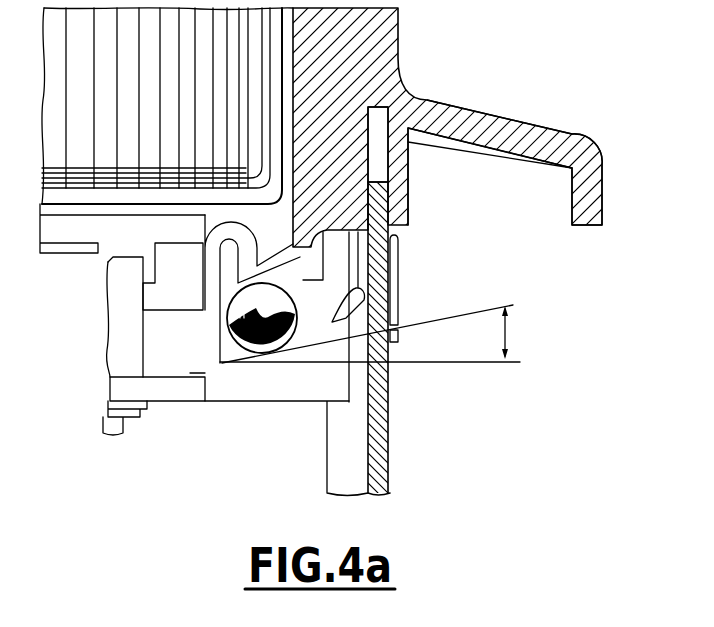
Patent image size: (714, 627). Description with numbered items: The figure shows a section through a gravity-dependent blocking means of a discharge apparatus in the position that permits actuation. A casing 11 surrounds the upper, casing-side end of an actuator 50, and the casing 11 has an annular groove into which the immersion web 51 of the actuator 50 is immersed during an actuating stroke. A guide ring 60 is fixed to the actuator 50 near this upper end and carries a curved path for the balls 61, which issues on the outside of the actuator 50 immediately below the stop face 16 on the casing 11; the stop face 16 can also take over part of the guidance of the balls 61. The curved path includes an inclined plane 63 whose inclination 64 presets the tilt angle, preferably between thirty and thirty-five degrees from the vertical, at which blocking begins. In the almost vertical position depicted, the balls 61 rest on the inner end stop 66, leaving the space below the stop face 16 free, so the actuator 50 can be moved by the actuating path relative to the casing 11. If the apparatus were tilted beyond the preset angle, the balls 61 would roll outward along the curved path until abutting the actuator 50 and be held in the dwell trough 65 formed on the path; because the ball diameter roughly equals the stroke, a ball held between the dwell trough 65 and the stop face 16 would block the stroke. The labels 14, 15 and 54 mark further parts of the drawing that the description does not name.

The casing 11 is at (378, 40).
The flange 14 is at (507, 127).
The recess 15 is at (377, 123).
The stop face 16 is at (298, 243).
The actuator 50 is at (388, 418).
The immersion web 51 is at (398, 257).
The housing 54 is at (105, 97).
The guide ring 60 is at (222, 388).
The balls 61 is at (273, 345).
The inclined plane 63 is at (323, 263).
The inclination 64 is at (506, 332).
The dwell trough 65 is at (353, 288).
The inner end stop 66 is at (210, 272).